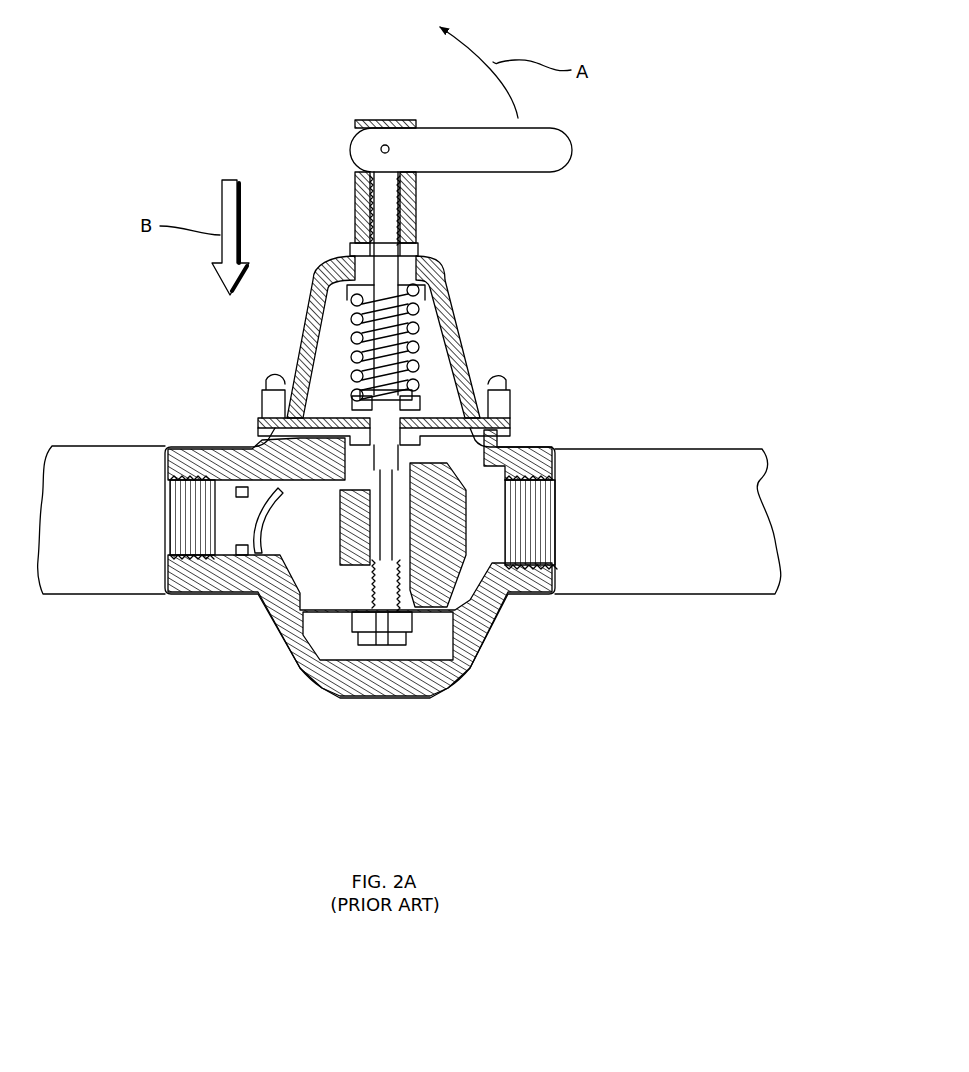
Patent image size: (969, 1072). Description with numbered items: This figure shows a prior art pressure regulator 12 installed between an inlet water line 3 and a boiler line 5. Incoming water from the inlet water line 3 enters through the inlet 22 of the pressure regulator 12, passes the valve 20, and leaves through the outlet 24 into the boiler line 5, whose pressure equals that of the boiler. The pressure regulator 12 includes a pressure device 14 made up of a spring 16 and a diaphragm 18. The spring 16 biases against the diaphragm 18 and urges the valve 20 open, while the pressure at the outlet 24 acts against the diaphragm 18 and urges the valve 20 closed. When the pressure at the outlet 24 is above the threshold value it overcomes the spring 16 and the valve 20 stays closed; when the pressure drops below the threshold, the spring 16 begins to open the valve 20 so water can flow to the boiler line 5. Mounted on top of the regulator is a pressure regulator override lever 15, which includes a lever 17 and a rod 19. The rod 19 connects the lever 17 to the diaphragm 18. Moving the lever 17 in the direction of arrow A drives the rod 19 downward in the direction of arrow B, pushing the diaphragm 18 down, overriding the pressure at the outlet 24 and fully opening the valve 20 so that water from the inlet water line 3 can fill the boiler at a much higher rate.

The inlet water line 3 is at (152, 597).
The boiler line 5 is at (573, 595).
The pressure regulator 12 is at (526, 397).
The pressure device 14 is at (431, 372).
The pressure regulator override lever 15 is at (320, 181).
The spring 16 is at (420, 315).
The lever 17 is at (547, 162).
The diaphragm 18 is at (288, 407).
The rod 19 is at (395, 213).
The valve 20 is at (427, 637).
The inlet 22 is at (158, 527).
The outlet 24 is at (568, 524).